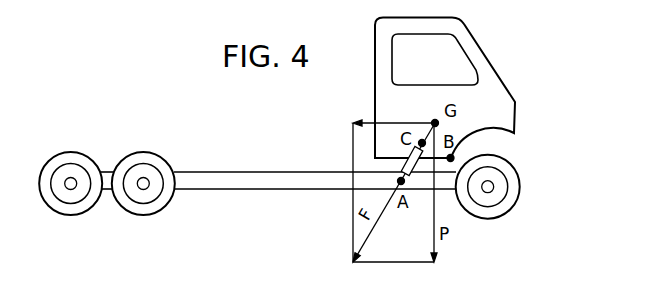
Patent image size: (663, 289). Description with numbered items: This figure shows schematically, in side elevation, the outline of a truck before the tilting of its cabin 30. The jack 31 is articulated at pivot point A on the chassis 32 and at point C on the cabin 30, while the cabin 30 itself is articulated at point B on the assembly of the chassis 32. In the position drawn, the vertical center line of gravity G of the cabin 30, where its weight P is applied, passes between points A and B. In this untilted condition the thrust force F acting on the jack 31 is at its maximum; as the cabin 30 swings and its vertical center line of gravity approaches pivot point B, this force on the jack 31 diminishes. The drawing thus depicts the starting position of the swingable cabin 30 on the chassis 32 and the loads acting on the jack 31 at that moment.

The cabin 30 is at (504, 76).
The jack 31 is at (404, 167).
The chassis 32 is at (242, 179).